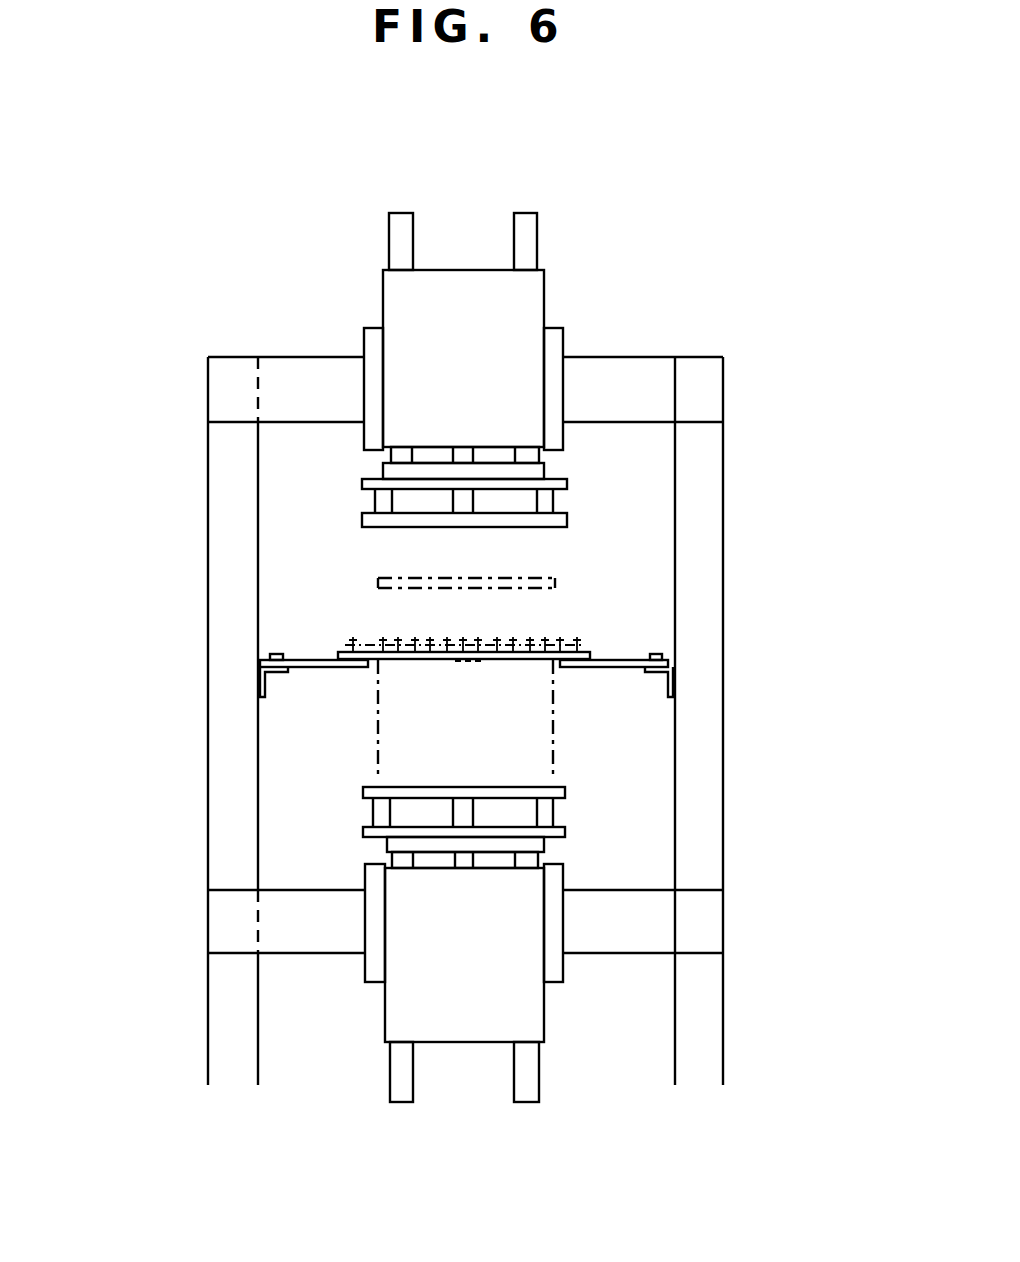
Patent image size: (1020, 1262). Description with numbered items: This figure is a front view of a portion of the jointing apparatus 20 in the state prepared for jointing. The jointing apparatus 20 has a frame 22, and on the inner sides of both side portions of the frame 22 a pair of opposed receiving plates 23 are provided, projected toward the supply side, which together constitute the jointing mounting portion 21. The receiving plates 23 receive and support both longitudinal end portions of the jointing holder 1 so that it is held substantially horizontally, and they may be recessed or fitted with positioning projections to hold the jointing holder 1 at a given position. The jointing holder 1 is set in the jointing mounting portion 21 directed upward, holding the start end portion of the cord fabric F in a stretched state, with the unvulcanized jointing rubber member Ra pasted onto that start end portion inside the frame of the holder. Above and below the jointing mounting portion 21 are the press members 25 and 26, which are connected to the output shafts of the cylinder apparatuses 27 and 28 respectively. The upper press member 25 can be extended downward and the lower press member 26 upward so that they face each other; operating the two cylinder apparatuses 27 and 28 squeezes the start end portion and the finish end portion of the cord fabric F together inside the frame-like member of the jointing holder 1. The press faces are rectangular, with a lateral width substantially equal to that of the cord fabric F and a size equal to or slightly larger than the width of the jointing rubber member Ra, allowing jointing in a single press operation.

The jointing apparatus 20 is at (684, 298).
The jointing mounting portion 21 is at (626, 634).
The frame 22 is at (232, 862).
The receiving plate 23 is at (318, 658).
The press member 25 is at (530, 500).
The press member 26 is at (527, 812).
The cylinder apparatus 27 is at (516, 301).
The cylinder apparatus 28 is at (500, 1005).
The jointing holder 1 is at (372, 632).
The jointing rubber member Ra is at (556, 646).
The cord fabric F is at (397, 582).